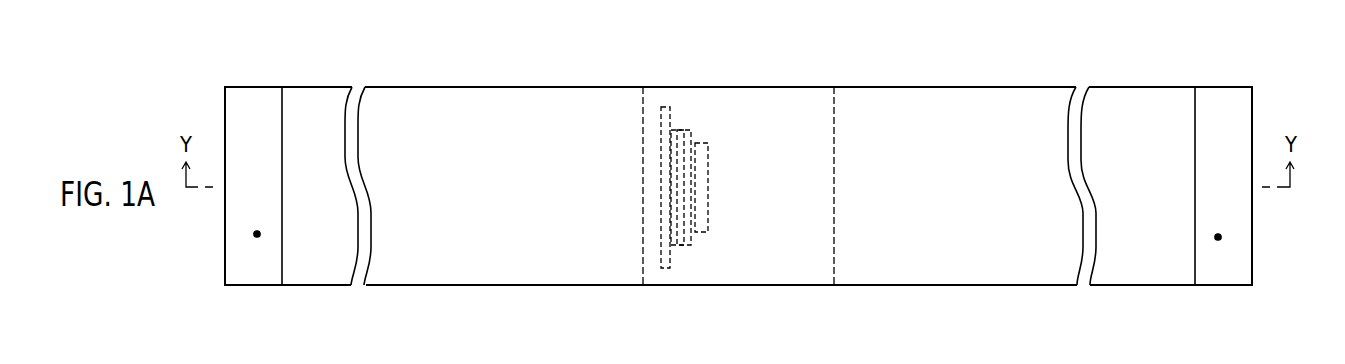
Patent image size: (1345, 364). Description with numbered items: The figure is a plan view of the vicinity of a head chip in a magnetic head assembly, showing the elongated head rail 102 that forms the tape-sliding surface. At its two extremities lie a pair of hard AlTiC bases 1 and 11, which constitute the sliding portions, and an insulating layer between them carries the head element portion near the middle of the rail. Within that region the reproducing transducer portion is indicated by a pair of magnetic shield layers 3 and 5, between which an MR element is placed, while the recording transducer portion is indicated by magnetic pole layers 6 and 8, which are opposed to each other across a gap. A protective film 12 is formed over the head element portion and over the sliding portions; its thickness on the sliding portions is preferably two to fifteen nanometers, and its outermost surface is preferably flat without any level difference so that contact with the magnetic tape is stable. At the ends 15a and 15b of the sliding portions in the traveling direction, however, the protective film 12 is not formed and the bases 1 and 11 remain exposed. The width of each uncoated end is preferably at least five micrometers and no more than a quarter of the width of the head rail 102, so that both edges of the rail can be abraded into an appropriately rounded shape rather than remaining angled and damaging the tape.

The head rail 102 is at (1266, 88).
The base 1 is at (253, 102).
The base 11 is at (1225, 105).
The protective film 12 is at (895, 103).
The magnetic shield layer 3 is at (667, 104).
The magnetic shield layer 5 is at (678, 128).
The magnetic pole layer 6 is at (685, 128).
The magnetic pole layer 8 is at (702, 141).
The end 15a is at (255, 234).
The end 15b is at (1220, 237).